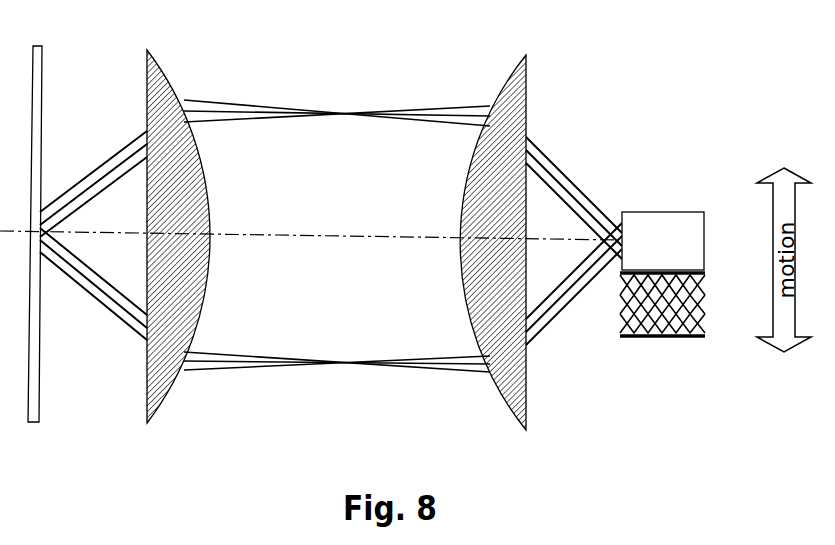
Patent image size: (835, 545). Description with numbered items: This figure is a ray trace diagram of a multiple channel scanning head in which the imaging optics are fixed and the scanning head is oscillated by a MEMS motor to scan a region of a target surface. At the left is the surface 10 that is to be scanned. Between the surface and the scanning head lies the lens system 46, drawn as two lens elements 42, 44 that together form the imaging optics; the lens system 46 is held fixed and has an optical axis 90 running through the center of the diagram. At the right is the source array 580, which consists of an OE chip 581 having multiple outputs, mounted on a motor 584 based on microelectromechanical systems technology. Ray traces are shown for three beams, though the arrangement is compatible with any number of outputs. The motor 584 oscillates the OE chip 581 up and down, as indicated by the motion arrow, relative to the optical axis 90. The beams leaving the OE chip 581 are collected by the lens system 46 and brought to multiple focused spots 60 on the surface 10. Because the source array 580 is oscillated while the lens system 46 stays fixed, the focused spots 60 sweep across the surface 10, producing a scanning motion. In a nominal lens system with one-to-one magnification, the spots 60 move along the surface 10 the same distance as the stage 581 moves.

The surface 10 is at (43, 96).
The first lens 42 is at (190, 232).
The second lens 44 is at (505, 234).
The lens system 46 is at (333, 321).
The focused spots 60 is at (40, 250).
The optical axis 90 is at (223, 235).
The source array 580 is at (677, 250).
The OE chip 581 is at (682, 253).
The motor 584 is at (682, 315).